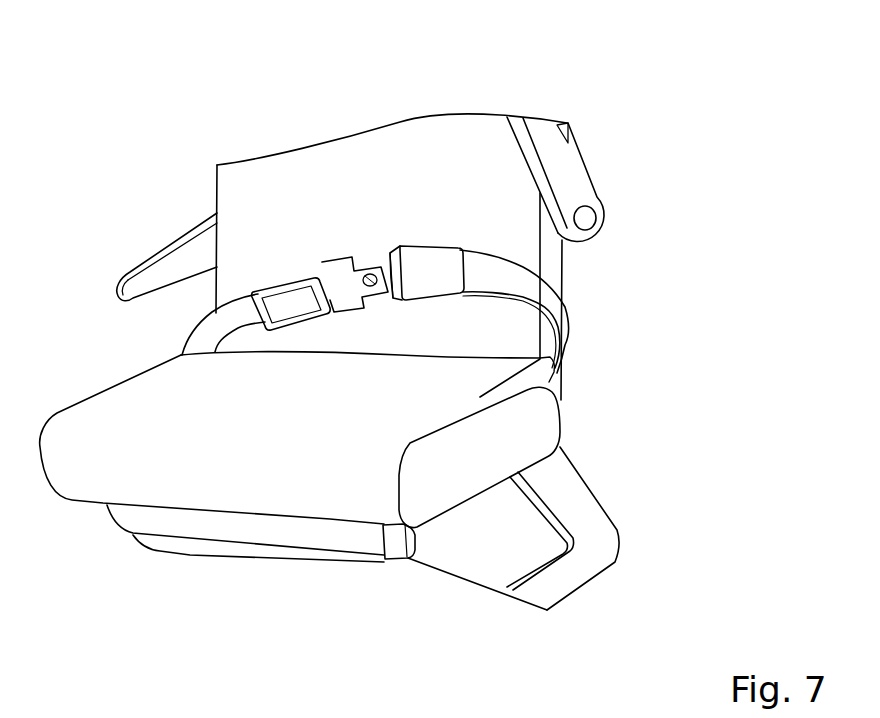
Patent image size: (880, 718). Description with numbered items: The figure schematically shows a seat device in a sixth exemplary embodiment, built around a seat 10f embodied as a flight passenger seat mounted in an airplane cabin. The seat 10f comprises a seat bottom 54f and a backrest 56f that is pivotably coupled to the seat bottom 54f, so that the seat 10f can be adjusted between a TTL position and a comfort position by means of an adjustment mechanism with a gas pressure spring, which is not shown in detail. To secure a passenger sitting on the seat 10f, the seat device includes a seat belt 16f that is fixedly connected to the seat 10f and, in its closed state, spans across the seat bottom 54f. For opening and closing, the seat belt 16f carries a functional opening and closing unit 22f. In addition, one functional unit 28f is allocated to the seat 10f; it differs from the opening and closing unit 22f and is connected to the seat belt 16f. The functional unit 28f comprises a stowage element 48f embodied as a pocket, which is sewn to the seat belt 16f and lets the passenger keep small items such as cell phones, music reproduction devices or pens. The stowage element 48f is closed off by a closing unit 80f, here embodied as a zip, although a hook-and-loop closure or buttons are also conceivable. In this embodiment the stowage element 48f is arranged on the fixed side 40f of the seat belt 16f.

The seat 10f is at (355, 127).
The seat belt 16f is at (575, 330).
The functional opening and closing unit 22f is at (401, 242).
The functional unit 28f is at (304, 328).
The fixed side 40f is at (222, 318).
The stowage element 48f is at (285, 275).
The seat bottom 54f is at (547, 290).
The backrest 56f is at (473, 181).
The closing unit 80f is at (217, 310).